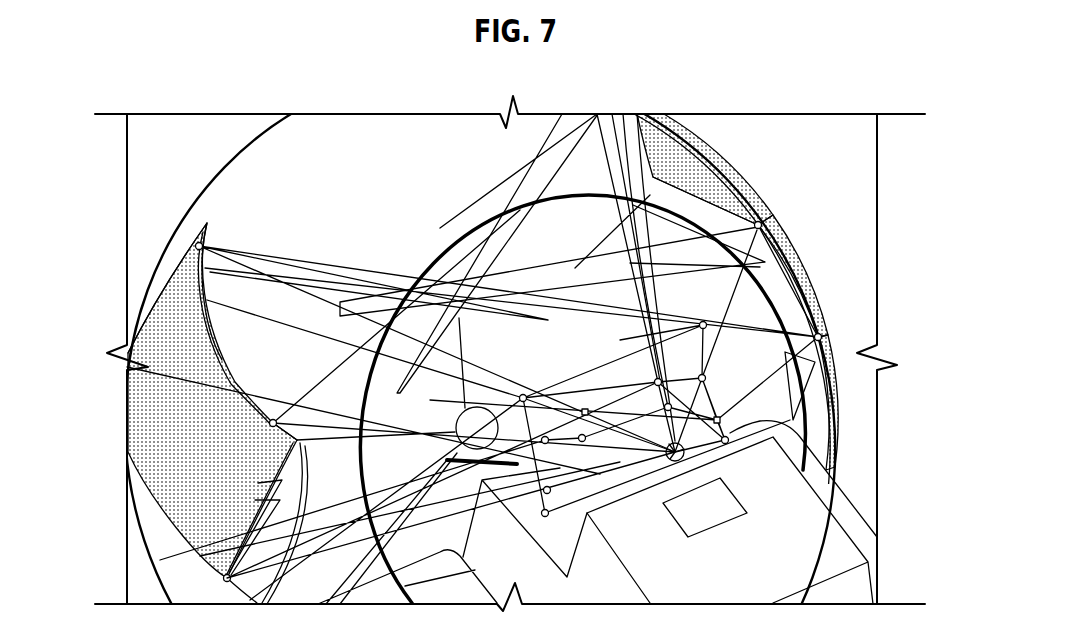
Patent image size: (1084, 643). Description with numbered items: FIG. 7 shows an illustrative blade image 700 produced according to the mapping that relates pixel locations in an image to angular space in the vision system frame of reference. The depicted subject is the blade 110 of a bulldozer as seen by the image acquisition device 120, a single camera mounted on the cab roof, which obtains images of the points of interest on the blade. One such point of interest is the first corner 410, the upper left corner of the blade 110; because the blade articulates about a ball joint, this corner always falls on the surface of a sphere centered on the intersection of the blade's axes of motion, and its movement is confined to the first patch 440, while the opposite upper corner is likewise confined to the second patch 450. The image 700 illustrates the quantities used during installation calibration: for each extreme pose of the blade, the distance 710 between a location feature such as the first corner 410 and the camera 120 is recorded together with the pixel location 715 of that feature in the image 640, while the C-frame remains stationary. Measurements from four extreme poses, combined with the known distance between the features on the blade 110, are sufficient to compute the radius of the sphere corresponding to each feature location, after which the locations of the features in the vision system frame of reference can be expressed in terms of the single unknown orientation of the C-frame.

The blade image 700 is at (806, 58).
The distance 710 is at (333, 303).
The pixel location 715 is at (480, 258).
The blade 110 is at (585, 410).
The first corner 410 is at (199, 266).
The first patch 440 is at (182, 512).
The second patch 450 is at (803, 280).
The image 640 is at (223, 577).
The image acquisition device 120 is at (797, 476).